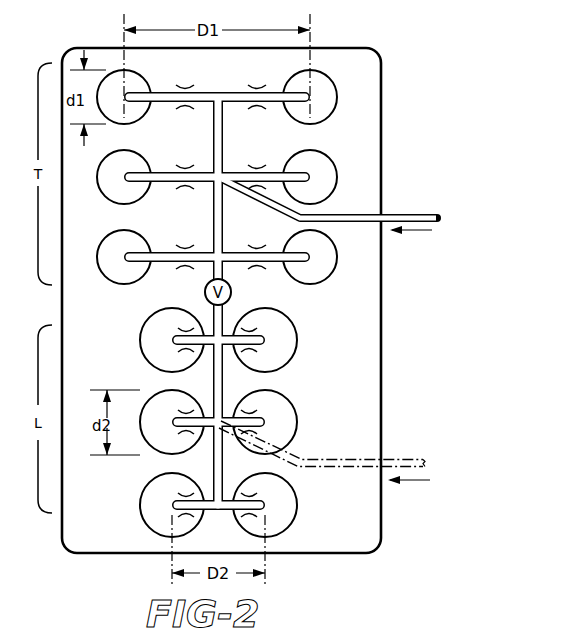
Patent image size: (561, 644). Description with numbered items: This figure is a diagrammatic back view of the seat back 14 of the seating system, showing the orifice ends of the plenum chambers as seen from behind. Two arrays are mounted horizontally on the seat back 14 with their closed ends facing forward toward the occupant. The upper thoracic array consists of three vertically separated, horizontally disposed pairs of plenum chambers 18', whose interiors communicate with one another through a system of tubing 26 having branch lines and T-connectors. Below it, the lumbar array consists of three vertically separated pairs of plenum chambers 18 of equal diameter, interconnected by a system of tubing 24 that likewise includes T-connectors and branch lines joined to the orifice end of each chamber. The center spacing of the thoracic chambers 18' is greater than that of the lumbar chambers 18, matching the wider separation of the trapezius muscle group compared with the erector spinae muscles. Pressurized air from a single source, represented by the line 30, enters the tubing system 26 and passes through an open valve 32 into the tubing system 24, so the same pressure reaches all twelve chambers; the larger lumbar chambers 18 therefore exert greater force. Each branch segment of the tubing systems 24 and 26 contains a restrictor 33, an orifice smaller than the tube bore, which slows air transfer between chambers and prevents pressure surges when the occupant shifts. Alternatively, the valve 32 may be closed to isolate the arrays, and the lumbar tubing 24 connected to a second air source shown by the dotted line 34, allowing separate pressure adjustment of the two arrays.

The seat back 14 is at (367, 517).
The thoracic plenum chambers 18' is at (230, 177).
The lumbar plenum chambers 18 is at (219, 422).
The tubing system of the lumbar array 24 is at (213, 368).
The tubing system of the thoracic array 26 is at (215, 220).
The pressurized air source line 30 is at (400, 214).
The valve 32 is at (238, 268).
The restrictor 33 is at (252, 352).
The second air source line 34 is at (402, 458).